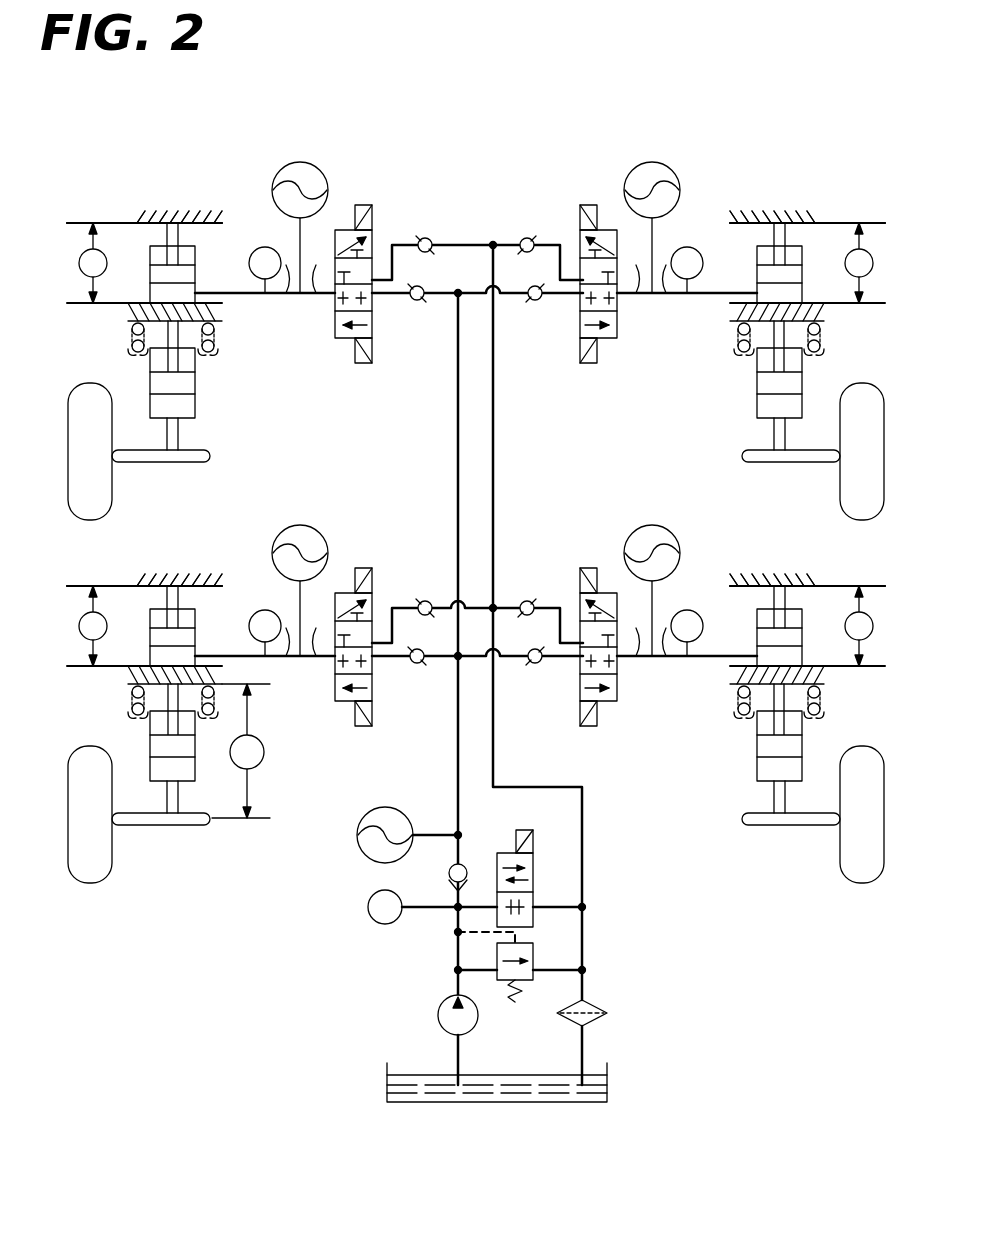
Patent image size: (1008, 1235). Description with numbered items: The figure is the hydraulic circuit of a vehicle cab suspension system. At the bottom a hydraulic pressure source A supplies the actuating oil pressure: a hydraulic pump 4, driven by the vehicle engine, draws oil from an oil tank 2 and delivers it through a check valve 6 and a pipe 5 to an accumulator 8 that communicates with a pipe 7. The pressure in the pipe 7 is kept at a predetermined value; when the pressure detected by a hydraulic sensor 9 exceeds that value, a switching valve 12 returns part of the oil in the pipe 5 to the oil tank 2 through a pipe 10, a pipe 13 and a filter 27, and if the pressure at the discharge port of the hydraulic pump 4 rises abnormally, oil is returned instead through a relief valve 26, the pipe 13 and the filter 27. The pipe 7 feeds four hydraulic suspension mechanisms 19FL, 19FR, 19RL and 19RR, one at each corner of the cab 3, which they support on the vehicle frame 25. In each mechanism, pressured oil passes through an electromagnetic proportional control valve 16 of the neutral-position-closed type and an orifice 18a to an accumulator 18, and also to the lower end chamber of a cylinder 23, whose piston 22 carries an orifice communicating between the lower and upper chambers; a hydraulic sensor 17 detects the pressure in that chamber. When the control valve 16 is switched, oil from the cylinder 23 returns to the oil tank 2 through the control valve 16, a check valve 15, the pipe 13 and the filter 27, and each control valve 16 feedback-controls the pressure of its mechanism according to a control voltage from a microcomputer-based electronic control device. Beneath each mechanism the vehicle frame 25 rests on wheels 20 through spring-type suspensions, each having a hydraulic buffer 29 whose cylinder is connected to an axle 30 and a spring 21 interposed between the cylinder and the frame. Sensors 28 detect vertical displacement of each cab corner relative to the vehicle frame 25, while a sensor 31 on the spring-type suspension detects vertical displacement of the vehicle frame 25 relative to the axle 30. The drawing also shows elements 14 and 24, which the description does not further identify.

The oil tank 2 is at (522, 1078).
The cab 3 is at (190, 214).
The hydraulic pump 4 is at (437, 1017).
The pipe 5 is at (456, 952).
The check valve 6 is at (462, 866).
The pipe 7 is at (457, 764).
The accumulator 8 is at (372, 810).
The hydraulic sensor 9 is at (368, 907).
The pipe 10 is at (484, 906).
The switching valve 12 is at (536, 866).
The pipe 13 is at (493, 760).
The check valve 14 is at (417, 301).
The check valve 15 is at (432, 240).
The control valve 16 is at (372, 244).
The hydraulic sensor 17 is at (262, 247).
The accumulator 18 is at (322, 172).
The orifice 18a is at (312, 300).
The hydraulic suspension mechanism 19FL is at (135, 211).
The hydraulic suspension mechanism 19FR is at (817, 211).
The hydraulic suspension mechanism 19RL is at (131, 575).
The hydraulic suspension mechanism 19RR is at (824, 577).
The wheel 20 is at (86, 392).
The spring 21 is at (213, 345).
The piston 22 is at (185, 276).
The cylinder 23 is at (150, 296).
The piston rod 24 is at (178, 240).
The vehicle frame 25 is at (126, 313).
The relief valve 26 is at (535, 960).
The filter 27 is at (594, 1003).
The sensor 28 is at (101, 252).
The hydraulic shock-absorber 29 is at (197, 392).
The axle 30 is at (164, 463).
The sensor 31 is at (265, 753).
The hydraulic pressure source A is at (510, 839).